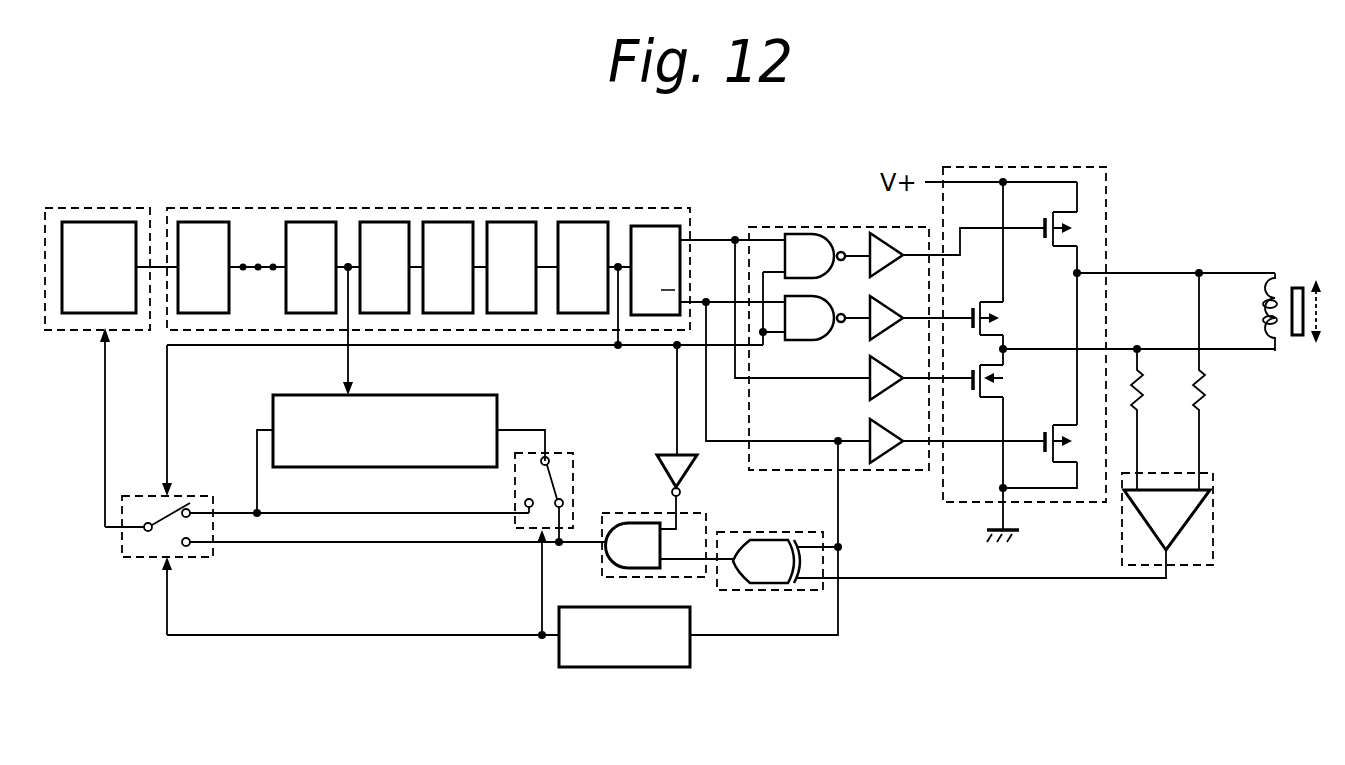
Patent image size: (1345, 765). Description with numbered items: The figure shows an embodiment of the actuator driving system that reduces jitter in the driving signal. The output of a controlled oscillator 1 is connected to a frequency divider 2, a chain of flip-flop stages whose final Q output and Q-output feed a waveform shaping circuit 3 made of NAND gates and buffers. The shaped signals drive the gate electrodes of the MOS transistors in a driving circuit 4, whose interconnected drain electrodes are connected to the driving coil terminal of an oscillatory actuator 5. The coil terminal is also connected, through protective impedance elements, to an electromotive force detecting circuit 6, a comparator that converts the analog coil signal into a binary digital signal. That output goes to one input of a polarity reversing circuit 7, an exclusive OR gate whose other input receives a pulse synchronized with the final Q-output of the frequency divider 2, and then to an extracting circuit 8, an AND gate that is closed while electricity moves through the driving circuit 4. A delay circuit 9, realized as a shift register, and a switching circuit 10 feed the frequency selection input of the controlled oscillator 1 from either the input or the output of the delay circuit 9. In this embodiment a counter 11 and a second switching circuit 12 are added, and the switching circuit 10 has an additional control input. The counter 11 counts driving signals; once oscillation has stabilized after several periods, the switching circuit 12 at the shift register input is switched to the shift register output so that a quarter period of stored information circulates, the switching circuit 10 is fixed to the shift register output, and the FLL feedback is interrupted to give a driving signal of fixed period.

The controlled oscillator 1 is at (100, 213).
The frequency divider 2 is at (343, 222).
The waveform shaping circuit 3 is at (767, 232).
The driving circuit 4 is at (1097, 197).
The oscillatory actuator 5 is at (1285, 275).
The electromotive force detecting circuit 6 is at (1200, 533).
The polarity reversing circuit 7 is at (773, 576).
The extracting circuit 8 is at (692, 527).
The delay circuit 9 is at (475, 407).
The switching circuit 10 is at (138, 546).
The counter 11 is at (617, 657).
The switching circuit 12 is at (562, 458).